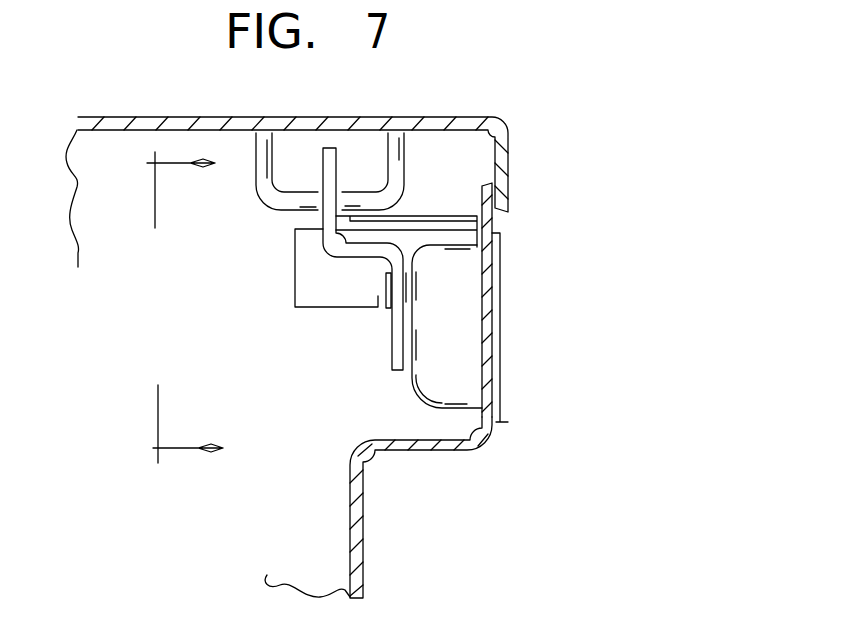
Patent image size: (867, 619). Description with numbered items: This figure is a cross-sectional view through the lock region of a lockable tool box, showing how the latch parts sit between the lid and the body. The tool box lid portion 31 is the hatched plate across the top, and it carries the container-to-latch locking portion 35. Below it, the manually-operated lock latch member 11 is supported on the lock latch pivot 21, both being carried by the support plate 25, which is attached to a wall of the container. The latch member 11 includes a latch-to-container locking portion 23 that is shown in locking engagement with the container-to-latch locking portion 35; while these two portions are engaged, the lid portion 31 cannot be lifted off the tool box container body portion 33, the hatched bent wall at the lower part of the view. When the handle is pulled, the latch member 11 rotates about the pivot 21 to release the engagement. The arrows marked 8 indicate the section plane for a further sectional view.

The section line 8- 8 is at (167, 323).
The manually-operated lock latch member 11 is at (313, 233).
The lock latch pivot 21 is at (387, 293).
The latch-to-container locking portion 23 is at (323, 157).
The support plate 25 is at (503, 407).
The tool box lid portion 31 is at (505, 152).
The tool box container body portion 33 is at (363, 522).
The container-to-latch locking portion 35 is at (407, 173).